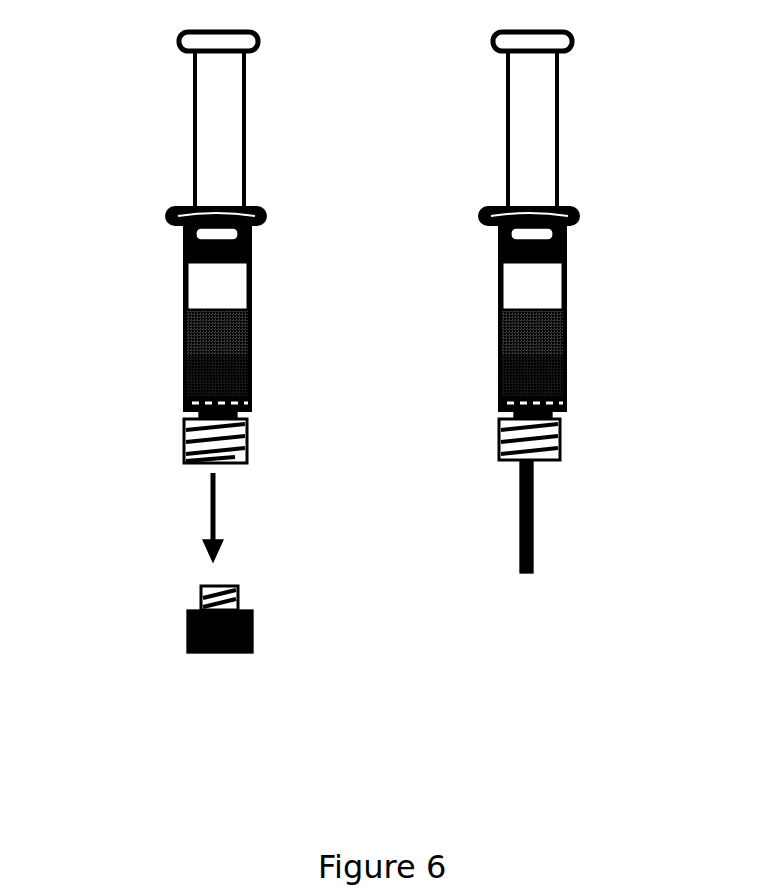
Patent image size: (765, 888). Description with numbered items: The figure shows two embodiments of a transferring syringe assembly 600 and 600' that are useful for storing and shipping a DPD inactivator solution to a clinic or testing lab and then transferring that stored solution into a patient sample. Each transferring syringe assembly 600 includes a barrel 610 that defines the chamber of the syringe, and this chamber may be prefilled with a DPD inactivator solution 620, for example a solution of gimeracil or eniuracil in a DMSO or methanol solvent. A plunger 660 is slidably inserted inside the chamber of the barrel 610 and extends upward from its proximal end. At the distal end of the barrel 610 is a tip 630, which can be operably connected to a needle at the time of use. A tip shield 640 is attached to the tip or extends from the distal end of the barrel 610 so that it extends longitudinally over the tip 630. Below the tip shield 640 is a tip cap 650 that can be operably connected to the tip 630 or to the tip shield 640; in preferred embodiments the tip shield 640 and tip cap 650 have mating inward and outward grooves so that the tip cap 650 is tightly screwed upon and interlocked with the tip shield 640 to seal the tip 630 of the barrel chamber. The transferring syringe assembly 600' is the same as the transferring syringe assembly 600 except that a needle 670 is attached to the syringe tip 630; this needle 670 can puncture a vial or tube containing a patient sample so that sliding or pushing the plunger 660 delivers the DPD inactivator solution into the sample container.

The transferring syringe assembly 600 is at (192, 338).
The transferring syringe assembly 600' is at (605, 296).
The barrel 610 is at (187, 273).
The DPD inactivator solution 620 is at (187, 348).
The tip 630 is at (186, 410).
The tip shield 640 is at (181, 437).
The tip cap 650 is at (187, 637).
The plunger 660 is at (245, 115).
The needle 670 is at (538, 522).